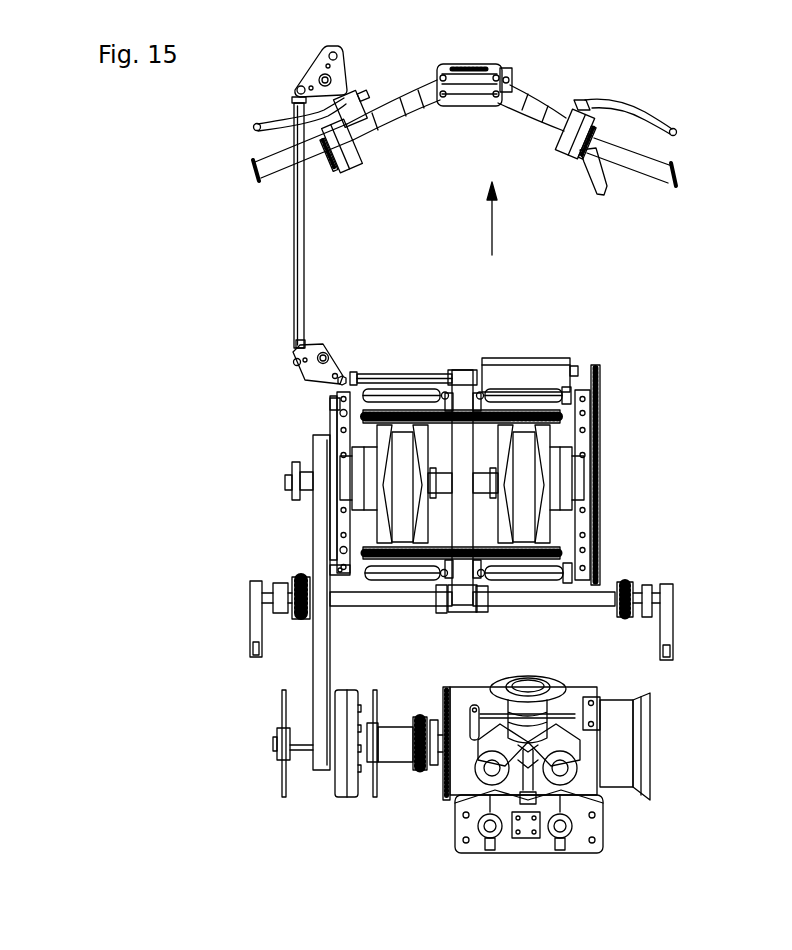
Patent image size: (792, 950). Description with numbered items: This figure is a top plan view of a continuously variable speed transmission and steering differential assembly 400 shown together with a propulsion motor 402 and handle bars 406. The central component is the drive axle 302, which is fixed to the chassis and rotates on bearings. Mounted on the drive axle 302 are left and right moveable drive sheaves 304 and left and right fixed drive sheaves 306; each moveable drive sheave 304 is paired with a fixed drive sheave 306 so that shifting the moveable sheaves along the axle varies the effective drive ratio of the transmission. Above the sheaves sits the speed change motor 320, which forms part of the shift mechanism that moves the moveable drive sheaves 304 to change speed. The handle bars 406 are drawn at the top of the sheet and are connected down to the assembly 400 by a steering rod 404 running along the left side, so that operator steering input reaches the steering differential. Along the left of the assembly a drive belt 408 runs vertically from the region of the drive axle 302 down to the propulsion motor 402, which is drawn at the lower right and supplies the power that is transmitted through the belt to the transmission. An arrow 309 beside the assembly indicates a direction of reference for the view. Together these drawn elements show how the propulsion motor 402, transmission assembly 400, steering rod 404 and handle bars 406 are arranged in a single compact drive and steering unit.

The continuously variable speed transmission and steering differential assembly 400 is at (203, 447).
The drive axle 302 is at (300, 468).
The moveable drive sheaves 304 is at (378, 432).
The fixed drive sheaves 306 is at (417, 418).
The direction arrow 309 is at (496, 232).
The speed change motor 320 is at (507, 375).
The propulsion motor 402 is at (610, 830).
The steering rod 404 is at (292, 238).
The handle bars 406 is at (550, 120).
The drive belt 408 is at (317, 667).